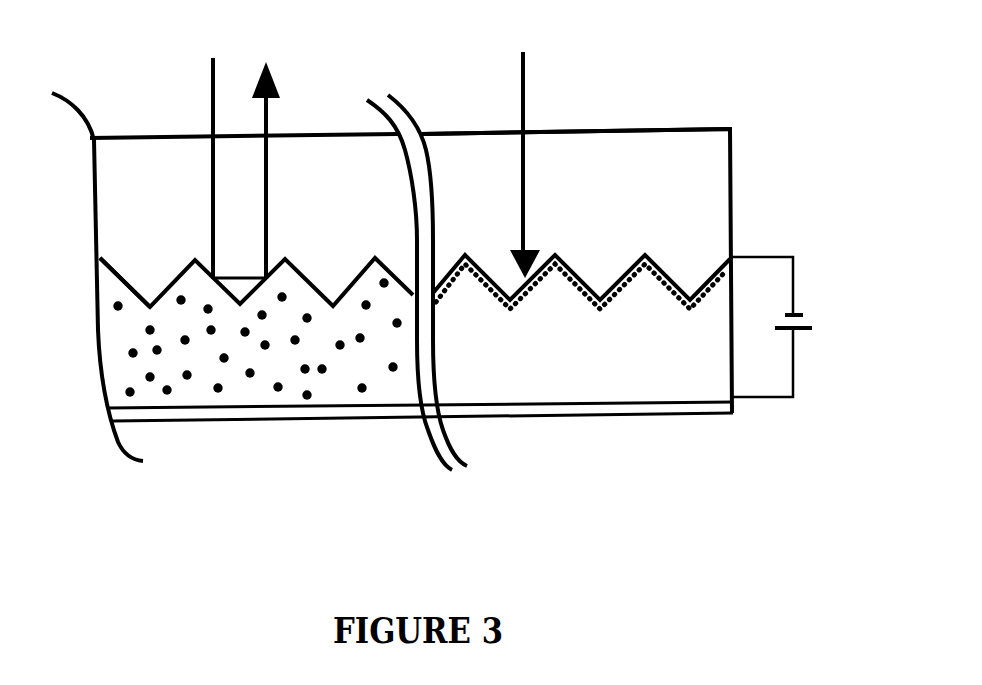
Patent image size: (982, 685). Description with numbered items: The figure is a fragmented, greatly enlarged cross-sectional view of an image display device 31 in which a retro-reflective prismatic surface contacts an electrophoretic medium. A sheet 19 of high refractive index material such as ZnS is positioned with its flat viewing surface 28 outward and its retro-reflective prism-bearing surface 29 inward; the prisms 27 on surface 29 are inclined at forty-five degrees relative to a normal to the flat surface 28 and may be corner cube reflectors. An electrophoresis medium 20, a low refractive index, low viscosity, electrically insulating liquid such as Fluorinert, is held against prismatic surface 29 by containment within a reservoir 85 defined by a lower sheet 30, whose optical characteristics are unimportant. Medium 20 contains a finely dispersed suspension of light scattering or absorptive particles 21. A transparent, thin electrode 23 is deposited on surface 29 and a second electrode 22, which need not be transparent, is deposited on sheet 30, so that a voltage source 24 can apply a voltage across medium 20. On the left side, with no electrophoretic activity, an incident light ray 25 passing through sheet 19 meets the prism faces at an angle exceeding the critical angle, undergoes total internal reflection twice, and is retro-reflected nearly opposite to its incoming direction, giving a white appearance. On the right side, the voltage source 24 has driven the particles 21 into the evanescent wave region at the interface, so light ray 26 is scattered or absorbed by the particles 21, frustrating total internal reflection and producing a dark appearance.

The sheet 19 is at (695, 168).
The electrophoresis medium 20 is at (470, 363).
The particles 21 is at (218, 390).
The electrode 22 is at (613, 403).
The electrode 23 is at (705, 272).
The voltage source 24 is at (797, 283).
The incident light ray 25 is at (210, 117).
The light ray 26 is at (525, 82).
The prisms 27 is at (153, 273).
The flat viewing surface 28 is at (620, 127).
The retro-reflective prism-bearing surface 29 is at (128, 290).
The lower sheet 30 is at (528, 403).
The image display device 31 is at (786, 464).
The reservoir 85 is at (113, 362).